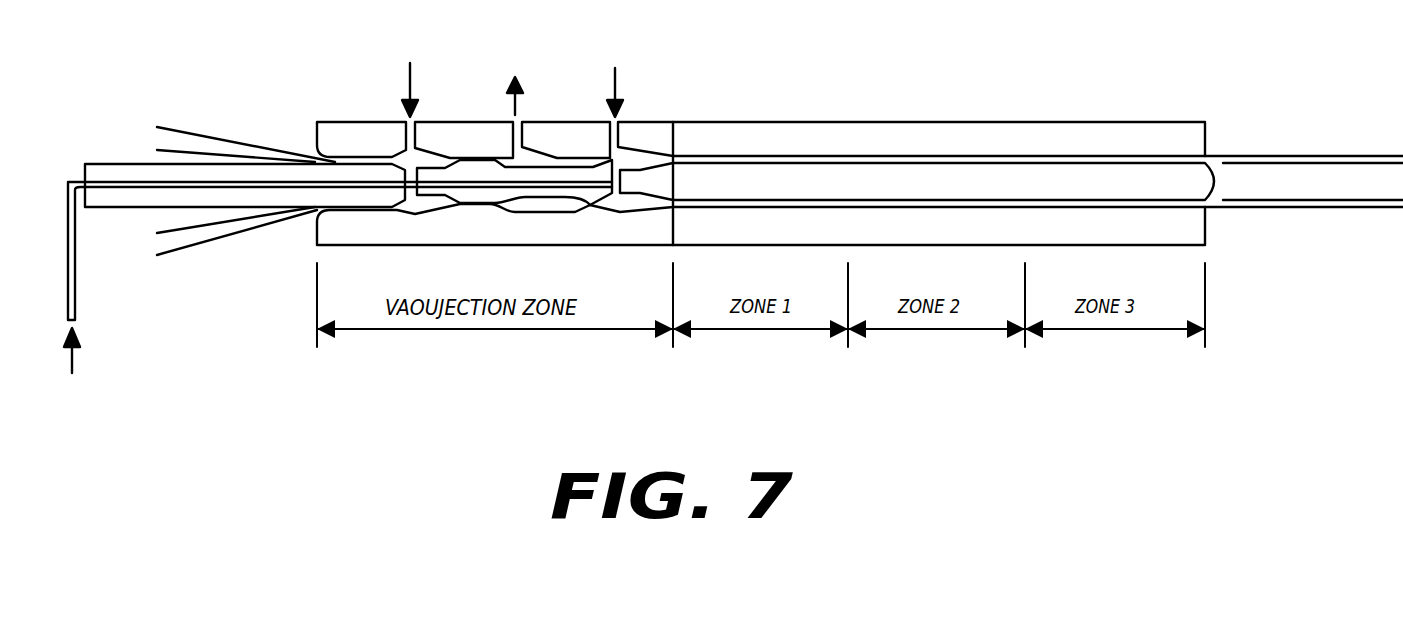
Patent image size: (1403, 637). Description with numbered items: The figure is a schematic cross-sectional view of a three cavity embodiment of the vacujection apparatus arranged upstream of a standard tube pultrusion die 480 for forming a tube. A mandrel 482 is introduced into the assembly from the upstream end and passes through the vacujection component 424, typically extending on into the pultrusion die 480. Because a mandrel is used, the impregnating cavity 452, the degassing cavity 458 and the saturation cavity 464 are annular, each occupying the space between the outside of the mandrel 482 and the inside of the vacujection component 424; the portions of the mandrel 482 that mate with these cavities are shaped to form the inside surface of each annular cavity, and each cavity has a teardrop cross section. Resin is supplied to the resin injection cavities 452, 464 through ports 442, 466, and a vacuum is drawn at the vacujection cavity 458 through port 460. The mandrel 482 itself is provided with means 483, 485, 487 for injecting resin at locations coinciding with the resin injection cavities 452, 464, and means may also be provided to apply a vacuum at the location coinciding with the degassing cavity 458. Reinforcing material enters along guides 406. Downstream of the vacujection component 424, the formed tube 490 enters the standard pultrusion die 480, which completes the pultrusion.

The upper feed channel 406 is at (203, 135).
The vacujection component 424 is at (330, 228).
The first injection port 442 is at (407, 120).
The impregnating cavity 452 is at (401, 157).
The degassing cavity 458 is at (507, 157).
The vacuum port 460 is at (513, 120).
The saturation cavity 464 is at (610, 157).
The second injection port 466 is at (615, 120).
The pultrusion die 480 is at (826, 130).
The mandrel 482 is at (120, 164).
The resin injecting means 483 is at (77, 290).
The resin injecting means 485 is at (400, 200).
The resin injecting means 487 is at (612, 193).
The tube 490 is at (1313, 156).